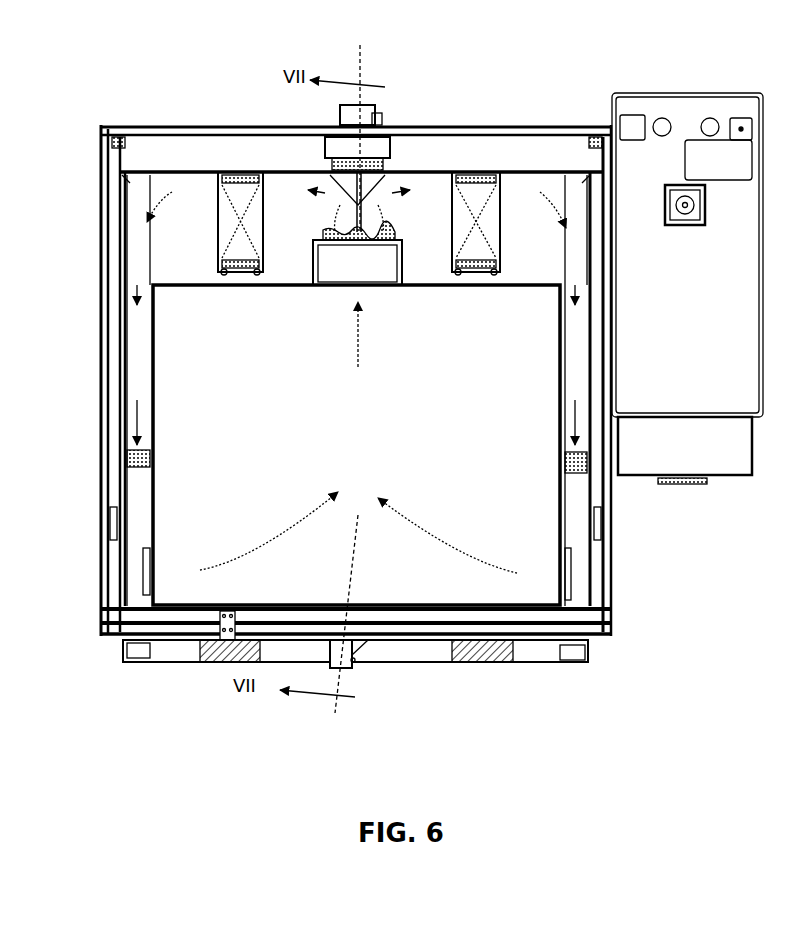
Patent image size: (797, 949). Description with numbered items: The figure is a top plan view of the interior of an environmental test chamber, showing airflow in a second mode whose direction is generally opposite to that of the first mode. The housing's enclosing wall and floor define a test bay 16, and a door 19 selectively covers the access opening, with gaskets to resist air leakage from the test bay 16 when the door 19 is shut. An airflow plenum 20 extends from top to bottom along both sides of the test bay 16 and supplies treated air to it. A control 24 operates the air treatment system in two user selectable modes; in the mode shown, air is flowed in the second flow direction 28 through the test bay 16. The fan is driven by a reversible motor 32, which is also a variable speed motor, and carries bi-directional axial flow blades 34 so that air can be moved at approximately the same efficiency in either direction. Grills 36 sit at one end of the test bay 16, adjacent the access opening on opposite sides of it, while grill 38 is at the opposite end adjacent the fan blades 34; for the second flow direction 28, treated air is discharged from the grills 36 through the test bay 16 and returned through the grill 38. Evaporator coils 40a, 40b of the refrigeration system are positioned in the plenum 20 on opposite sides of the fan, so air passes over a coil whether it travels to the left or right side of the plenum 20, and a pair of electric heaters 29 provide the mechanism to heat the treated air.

The test bay 16 is at (528, 432).
The door 19 is at (547, 662).
The airflow plenum 20 is at (132, 535).
The control 24 is at (695, 484).
The second flow direction 28 is at (360, 346).
The electric heaters 29 is at (137, 466).
The reversible motor 32 is at (389, 140).
The bi-directional axial flow blades 34 is at (396, 232).
The grills 36 is at (158, 573).
The grill 38 is at (325, 287).
The evaporator coil 40a is at (266, 215).
The evaporator coil 40b is at (503, 228).